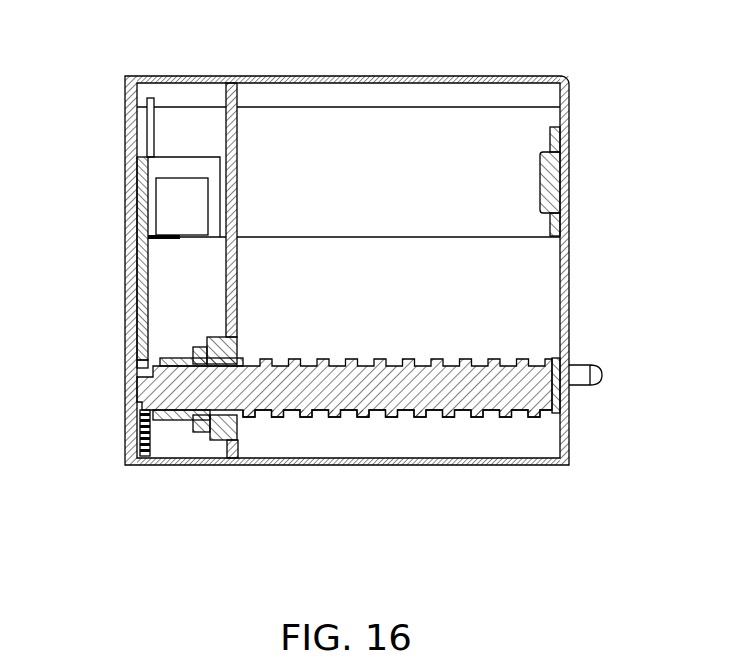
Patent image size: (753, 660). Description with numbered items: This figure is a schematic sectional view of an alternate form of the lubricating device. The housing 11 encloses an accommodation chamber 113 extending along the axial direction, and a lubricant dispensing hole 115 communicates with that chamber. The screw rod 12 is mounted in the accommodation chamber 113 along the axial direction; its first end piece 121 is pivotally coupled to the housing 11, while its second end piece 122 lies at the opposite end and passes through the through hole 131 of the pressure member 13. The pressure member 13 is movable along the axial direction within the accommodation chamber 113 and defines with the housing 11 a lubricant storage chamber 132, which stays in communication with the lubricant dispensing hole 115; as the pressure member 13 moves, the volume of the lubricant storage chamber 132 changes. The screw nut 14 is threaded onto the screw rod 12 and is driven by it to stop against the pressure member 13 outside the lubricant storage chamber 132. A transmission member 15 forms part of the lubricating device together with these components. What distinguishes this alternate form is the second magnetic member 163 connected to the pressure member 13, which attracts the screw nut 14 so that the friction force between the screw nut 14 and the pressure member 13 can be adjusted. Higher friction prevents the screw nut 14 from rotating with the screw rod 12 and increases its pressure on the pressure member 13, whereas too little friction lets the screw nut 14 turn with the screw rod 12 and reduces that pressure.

The housing 11 is at (570, 295).
The accommodation chamber 113 is at (150, 88).
The lubricant dispensing hole 115 is at (585, 368).
The screw rod 12 is at (532, 413).
The first end piece 121 is at (570, 395).
The second end piece 122 is at (137, 387).
The pressure member 13 is at (236, 193).
The through hole 131 is at (205, 340).
The lubricant storage chamber 132 is at (503, 135).
The screw nut 14 is at (173, 420).
The transmission member 15 is at (138, 283).
The second magnetic member 163 is at (237, 432).